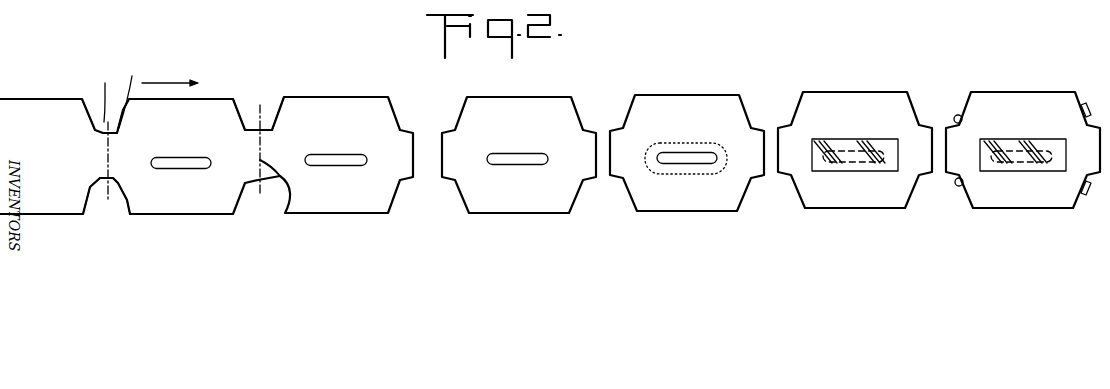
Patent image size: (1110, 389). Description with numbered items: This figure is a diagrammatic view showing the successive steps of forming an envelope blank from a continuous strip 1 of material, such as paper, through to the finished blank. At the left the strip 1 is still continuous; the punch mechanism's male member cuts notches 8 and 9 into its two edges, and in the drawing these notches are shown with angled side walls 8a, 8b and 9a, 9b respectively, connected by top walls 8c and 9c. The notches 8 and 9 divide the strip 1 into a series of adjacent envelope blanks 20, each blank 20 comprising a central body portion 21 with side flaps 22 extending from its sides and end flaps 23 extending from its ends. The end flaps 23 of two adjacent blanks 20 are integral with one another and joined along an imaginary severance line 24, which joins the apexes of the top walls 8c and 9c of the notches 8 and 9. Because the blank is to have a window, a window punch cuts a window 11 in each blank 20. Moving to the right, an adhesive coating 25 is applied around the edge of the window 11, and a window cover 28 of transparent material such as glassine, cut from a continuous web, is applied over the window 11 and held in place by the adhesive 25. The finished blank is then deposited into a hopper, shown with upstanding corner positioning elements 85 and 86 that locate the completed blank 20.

The continuous strip 1 is at (25, 110).
The notch 8 is at (115, 91).
The angled side wall 8a is at (125, 112).
The angled side wall 8b is at (82, 118).
The top wall 8c is at (104, 133).
The notch 9 is at (97, 200).
The angled side wall 9a is at (128, 202).
The angled side wall 9b is at (83, 198).
The top wall 9c is at (110, 178).
The window 11 is at (202, 158).
The envelope blank 20 is at (173, 215).
The central body portion 21 is at (225, 162).
The side flap 22 is at (223, 103).
The end flap 23 is at (598, 103).
The imaginary severance line 24 is at (107, 158).
The adhesive coating 25 is at (673, 172).
The window cover 28 is at (888, 143).
The corner positioning element 85 is at (960, 115).
The corner positioning element 86 is at (1088, 108).